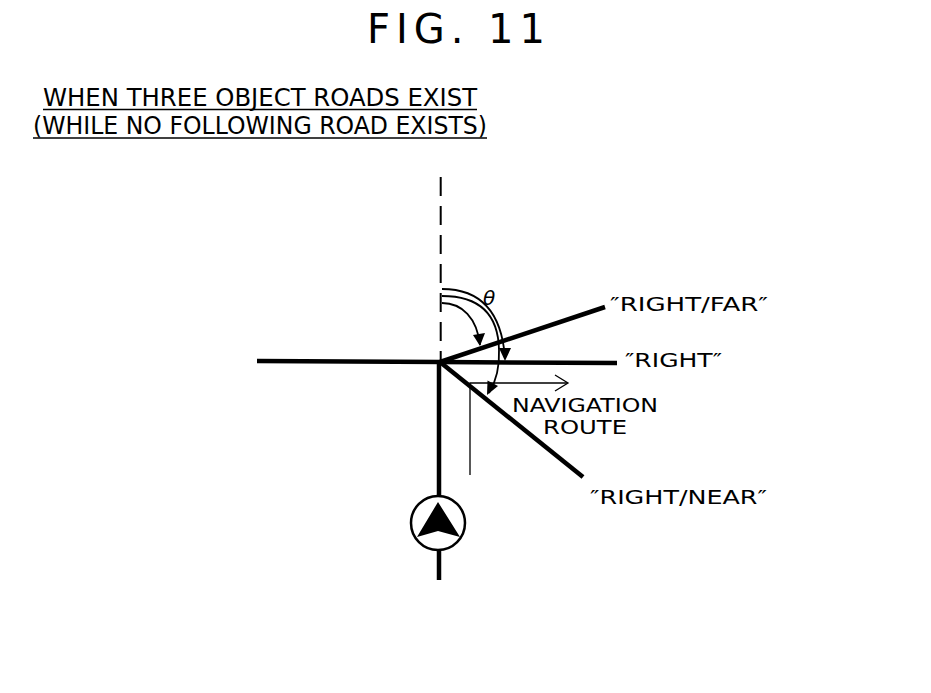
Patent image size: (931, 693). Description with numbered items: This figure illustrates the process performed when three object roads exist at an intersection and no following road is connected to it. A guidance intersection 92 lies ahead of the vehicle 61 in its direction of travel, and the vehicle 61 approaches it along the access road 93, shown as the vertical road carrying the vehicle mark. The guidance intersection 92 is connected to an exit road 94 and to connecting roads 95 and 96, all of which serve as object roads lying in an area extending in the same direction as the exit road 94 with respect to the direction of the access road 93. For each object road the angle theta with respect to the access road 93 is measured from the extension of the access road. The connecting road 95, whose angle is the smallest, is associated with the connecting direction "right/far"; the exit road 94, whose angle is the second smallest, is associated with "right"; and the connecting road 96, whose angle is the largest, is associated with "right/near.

The vehicle 61 is at (417, 525).
The guidance intersection 92 is at (383, 329).
The access road 93 is at (438, 427).
The exit road 94 is at (617, 368).
The connecting road 95 is at (557, 317).
The connecting road 96 is at (528, 437).